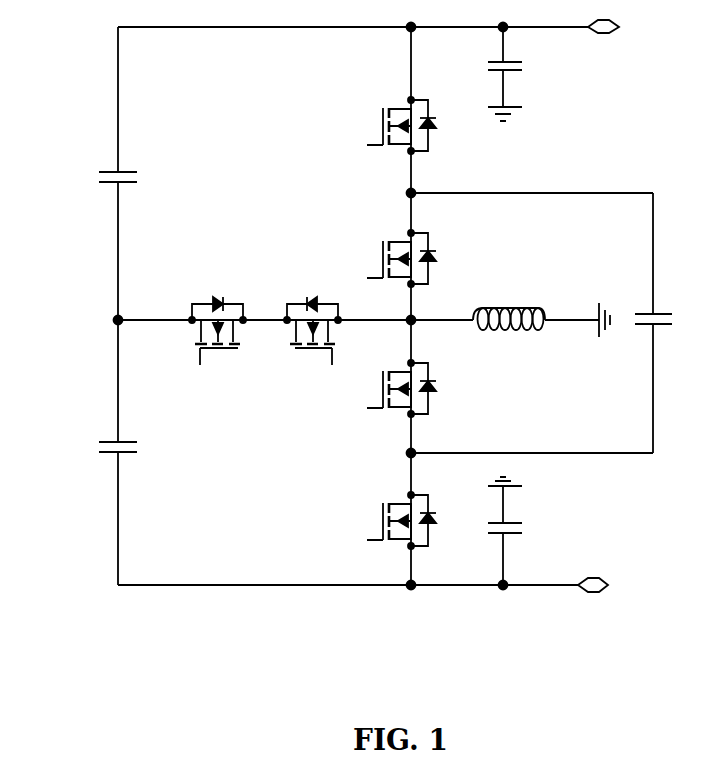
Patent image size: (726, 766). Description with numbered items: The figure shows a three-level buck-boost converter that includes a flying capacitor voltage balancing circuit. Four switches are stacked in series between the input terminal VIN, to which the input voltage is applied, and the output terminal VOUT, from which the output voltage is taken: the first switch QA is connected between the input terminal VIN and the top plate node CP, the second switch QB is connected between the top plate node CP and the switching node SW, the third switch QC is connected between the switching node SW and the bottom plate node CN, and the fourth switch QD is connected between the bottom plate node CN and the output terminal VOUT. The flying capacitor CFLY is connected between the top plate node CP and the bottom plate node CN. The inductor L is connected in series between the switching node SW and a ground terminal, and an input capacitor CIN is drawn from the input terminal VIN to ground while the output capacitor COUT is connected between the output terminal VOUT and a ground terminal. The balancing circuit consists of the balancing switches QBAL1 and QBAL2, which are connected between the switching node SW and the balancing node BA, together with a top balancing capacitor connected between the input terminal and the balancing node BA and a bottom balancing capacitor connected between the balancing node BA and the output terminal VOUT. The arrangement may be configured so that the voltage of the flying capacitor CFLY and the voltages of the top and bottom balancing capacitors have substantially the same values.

The first switch QA is at (392, 125).
The second switch QB is at (392, 248).
The third switch QC is at (392, 388).
The fourth switch QD is at (392, 520).
The balancing switch QBAL1 is at (217, 345).
The balancing switch QBAL2 is at (312, 345).
The input capacitor CIN is at (522, 74).
The output capacitor COUT is at (529, 531).
The flying capacitor CFLY is at (624, 323).
The inductor L is at (509, 307).
The input terminal VIN is at (629, 27).
The output terminal VOUT is at (623, 587).
The top plate node CP is at (530, 185).
The bottom plate node CN is at (530, 443).
The switching node SW is at (440, 310).
The balancing node BA is at (244, 321).